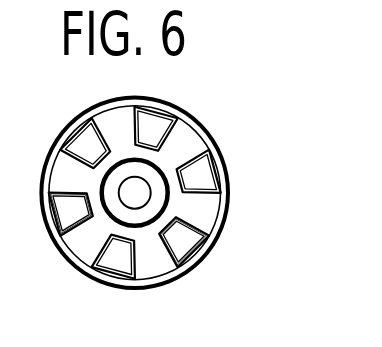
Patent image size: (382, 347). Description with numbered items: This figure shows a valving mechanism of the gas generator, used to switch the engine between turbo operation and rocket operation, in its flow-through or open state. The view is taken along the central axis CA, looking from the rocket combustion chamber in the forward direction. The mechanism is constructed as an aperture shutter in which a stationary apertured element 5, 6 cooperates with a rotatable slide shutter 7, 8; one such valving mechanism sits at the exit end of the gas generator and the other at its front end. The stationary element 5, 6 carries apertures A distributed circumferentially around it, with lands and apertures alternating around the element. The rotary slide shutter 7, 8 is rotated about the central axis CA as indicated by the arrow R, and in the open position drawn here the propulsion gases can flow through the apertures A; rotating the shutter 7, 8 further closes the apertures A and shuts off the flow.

The stationary apertured element 5 is at (228, 174).
The stationary apertured element 6 is at (188, 192).
The rotatable slide shutter 7 is at (200, 212).
The rotatable slide shutter 8 is at (179, 193).
The apertures A is at (73, 208).
The central axis CA is at (135, 193).
The arrow indicating rotation R is at (145, 130).